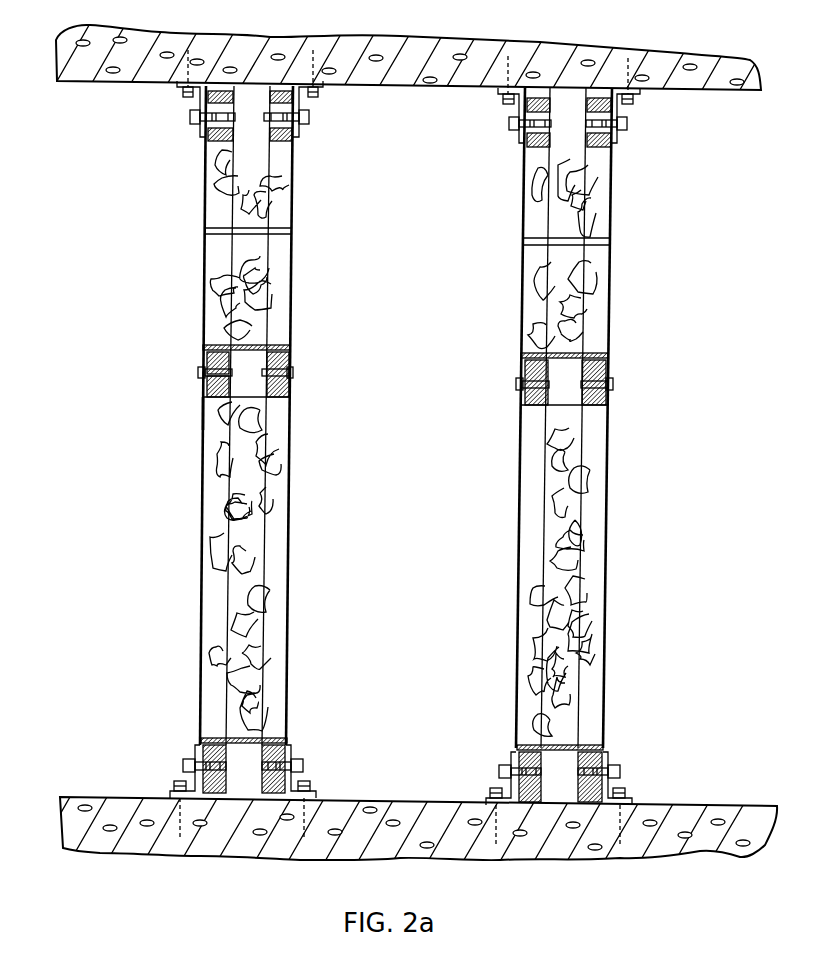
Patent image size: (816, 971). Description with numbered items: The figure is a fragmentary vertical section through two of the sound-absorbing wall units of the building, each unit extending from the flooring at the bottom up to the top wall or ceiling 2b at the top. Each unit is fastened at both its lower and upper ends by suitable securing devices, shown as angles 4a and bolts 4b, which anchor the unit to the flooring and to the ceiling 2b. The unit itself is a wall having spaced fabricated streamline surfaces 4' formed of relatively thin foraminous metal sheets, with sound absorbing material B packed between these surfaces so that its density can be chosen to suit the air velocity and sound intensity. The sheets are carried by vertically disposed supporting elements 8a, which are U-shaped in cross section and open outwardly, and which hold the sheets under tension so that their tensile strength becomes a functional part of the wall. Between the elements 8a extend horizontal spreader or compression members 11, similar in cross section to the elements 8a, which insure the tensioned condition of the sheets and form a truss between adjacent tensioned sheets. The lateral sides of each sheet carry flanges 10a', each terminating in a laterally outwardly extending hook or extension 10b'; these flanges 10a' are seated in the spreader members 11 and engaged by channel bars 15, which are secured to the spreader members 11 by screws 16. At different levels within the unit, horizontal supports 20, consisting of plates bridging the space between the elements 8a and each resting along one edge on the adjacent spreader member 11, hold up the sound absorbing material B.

The top wall or ceiling 2b is at (469, 89).
The fabricated streamline surfaces 4' is at (417, 417).
The angles 4a is at (310, 121).
The bolts 4b is at (320, 88).
The supporting elements 8a is at (231, 550).
The hook or extension 10b' is at (197, 368).
The flanges 10a' is at (270, 413).
The spreader or compression members 11 is at (206, 396).
The channel bars 15 is at (292, 378).
The screws 16 is at (610, 386).
The horizontal supports 20 is at (264, 337).
The sound absorbing material B is at (576, 457).